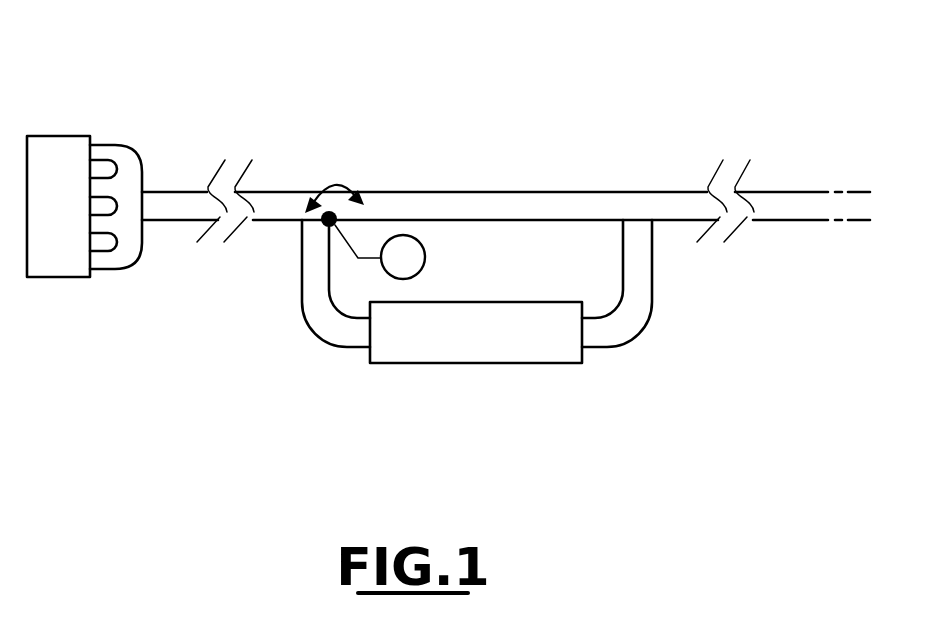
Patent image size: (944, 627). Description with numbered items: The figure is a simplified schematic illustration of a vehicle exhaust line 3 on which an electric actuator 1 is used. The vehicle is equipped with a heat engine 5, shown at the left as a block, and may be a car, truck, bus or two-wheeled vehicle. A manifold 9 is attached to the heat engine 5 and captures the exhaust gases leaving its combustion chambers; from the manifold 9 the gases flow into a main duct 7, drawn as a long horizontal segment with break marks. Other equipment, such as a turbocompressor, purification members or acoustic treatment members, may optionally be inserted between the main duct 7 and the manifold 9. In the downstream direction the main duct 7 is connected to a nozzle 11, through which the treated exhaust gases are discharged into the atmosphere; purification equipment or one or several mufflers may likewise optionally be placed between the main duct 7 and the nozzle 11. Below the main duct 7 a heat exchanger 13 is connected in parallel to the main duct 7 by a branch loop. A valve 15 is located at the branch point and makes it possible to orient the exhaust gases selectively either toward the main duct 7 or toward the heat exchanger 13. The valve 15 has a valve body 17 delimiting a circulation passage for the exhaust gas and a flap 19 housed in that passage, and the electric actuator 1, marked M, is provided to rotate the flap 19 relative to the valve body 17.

The electric actuator 1 is at (425, 257).
The exhaust line 3 is at (363, 128).
The heat engine 5 is at (55, 136).
The main duct 7 is at (468, 192).
The manifold 9 is at (125, 162).
The nozzle 11 is at (783, 192).
The heat exchanger 13 is at (473, 365).
The valve 15 is at (357, 190).
The valve body 17 is at (300, 204).
The flap 19 is at (313, 228).